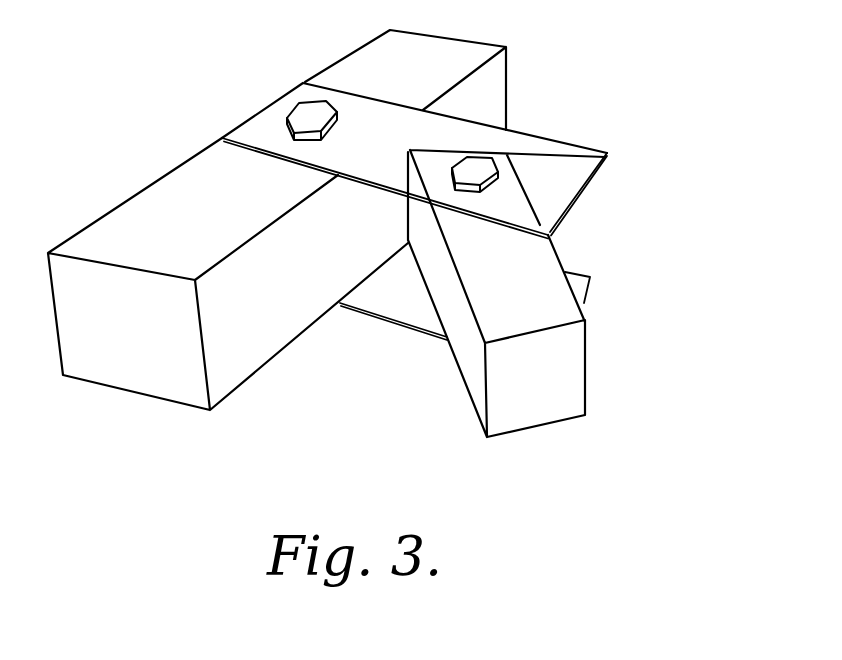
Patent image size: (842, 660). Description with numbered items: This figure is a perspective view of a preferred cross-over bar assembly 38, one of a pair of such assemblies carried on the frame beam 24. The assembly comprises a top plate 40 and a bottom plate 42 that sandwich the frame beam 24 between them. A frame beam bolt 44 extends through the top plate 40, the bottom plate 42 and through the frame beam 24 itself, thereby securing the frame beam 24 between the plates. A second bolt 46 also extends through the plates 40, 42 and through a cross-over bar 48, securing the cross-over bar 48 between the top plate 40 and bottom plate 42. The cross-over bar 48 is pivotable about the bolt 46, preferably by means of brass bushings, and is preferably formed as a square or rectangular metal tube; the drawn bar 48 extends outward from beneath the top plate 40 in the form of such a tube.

The frame beam 24 is at (167, 195).
The cross-over bar assembly 38 is at (524, 99).
The top plate 40 is at (356, 105).
The bottom plate 42 is at (405, 298).
The frame beam bolt 44 is at (307, 117).
The bolt 46 is at (478, 168).
The cross-over bar 48 is at (565, 312).